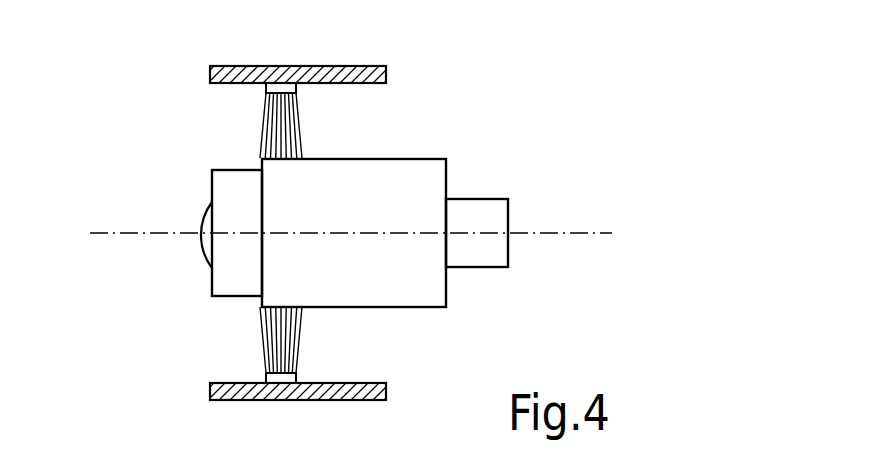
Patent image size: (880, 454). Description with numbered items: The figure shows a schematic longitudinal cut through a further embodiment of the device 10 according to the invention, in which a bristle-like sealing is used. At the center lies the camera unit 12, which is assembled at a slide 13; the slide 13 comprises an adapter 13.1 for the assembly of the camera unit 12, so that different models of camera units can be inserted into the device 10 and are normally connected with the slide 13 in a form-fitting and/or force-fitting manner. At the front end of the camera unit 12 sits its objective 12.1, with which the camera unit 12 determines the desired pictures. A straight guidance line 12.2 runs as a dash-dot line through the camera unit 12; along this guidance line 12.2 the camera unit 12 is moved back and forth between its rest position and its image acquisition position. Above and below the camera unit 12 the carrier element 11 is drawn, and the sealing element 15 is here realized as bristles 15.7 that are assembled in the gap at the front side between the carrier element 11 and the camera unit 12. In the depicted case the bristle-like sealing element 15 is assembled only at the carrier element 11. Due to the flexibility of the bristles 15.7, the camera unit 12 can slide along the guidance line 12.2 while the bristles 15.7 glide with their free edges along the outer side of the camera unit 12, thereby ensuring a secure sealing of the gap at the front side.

The device 10 is at (150, 158).
The carrier element 11 is at (330, 63).
The camera unit 12 is at (405, 188).
The slide 13 is at (492, 187).
The adapter 13.1 is at (420, 178).
The objective 12.1 is at (205, 242).
The guidance line 12.2 is at (570, 233).
The sealing element 15 is at (342, 233).
The bristles 15.7 is at (305, 93).